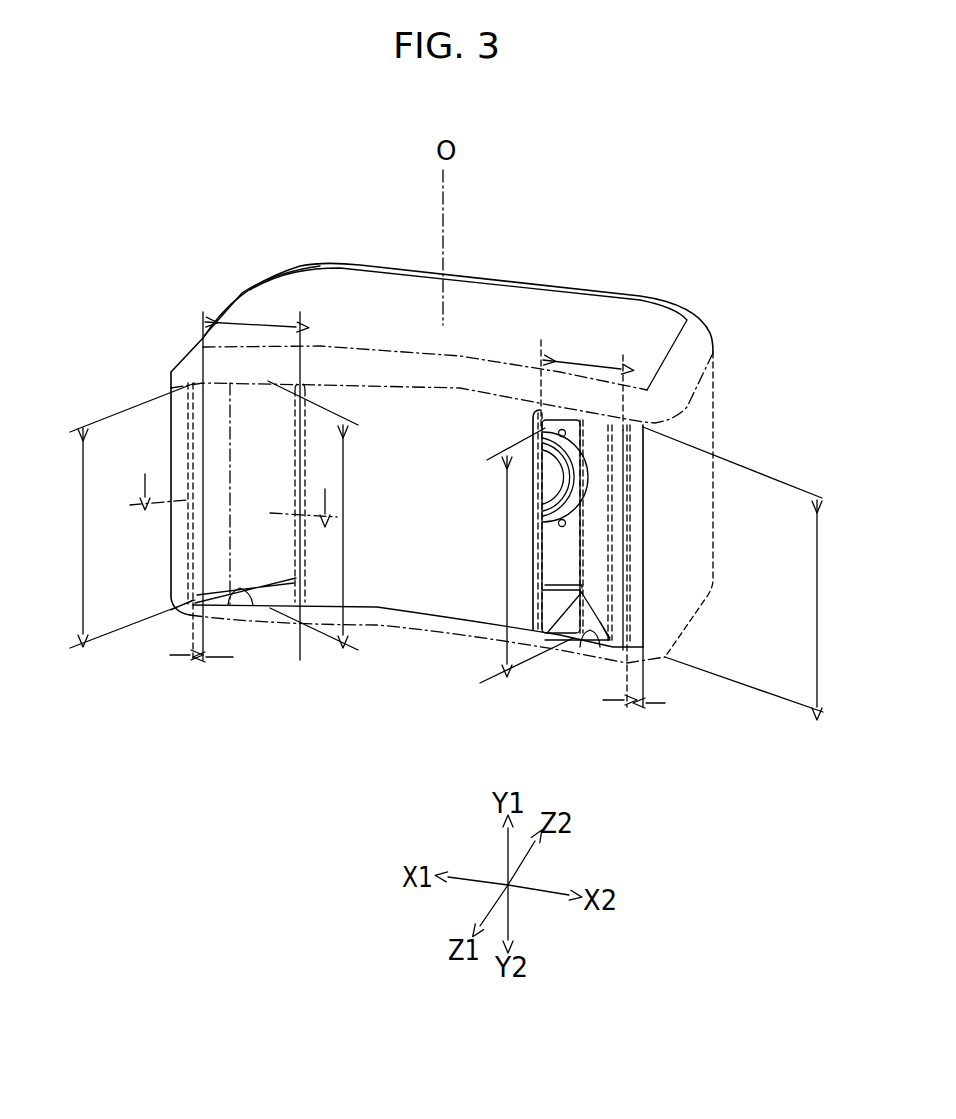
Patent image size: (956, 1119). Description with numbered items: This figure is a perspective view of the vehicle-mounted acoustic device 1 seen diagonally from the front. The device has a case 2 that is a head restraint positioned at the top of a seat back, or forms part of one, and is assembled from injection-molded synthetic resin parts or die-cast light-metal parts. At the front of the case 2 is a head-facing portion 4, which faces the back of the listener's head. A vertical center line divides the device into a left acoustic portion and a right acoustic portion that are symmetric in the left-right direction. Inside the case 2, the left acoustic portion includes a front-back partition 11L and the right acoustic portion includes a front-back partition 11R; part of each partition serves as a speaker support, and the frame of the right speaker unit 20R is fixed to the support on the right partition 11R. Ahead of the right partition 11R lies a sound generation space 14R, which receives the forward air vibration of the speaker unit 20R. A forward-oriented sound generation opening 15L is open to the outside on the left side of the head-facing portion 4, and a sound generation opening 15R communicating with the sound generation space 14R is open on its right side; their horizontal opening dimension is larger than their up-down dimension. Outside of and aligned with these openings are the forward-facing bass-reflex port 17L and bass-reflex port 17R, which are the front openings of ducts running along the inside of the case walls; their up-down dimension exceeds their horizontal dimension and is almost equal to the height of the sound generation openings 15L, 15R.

The vehicle-mounted acoustic device 1 is at (297, 254).
The case 2 is at (495, 303).
The head-facing portion 4 is at (423, 560).
The front-back partition 11L is at (263, 530).
The front-back partition 11R is at (600, 547).
The sound generation space 14R is at (572, 572).
The sound generation opening 15L is at (248, 603).
The sound generation opening 15R is at (587, 630).
The bass-reflex port 17L is at (197, 516).
The bass-reflex port 17R is at (632, 533).
The speaker unit 20R is at (547, 472).